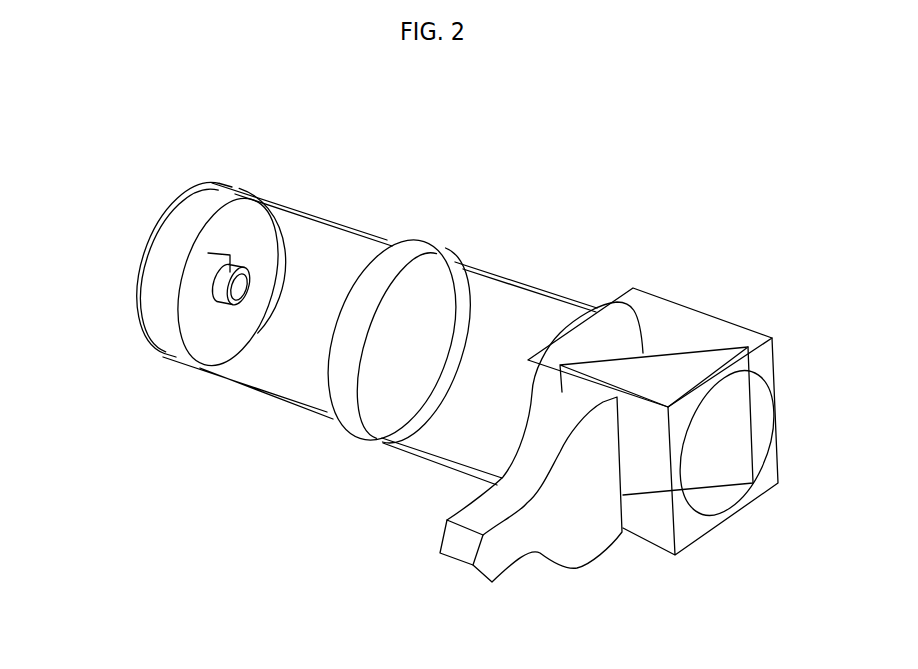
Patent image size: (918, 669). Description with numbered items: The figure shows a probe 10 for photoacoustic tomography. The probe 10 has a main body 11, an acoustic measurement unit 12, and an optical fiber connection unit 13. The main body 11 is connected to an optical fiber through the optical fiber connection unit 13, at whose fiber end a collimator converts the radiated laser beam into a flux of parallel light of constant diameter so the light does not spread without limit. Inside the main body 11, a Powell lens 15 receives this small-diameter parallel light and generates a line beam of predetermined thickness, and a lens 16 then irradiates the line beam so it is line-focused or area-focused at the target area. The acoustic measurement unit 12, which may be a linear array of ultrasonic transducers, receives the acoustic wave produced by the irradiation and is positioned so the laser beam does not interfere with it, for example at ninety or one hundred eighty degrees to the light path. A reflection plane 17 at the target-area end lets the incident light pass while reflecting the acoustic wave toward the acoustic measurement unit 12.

The photoacoustic probe 10 is at (584, 210).
The main body 11 is at (290, 368).
The acoustic measurement unit 12 is at (462, 535).
The optical fiber connection unit 13 is at (212, 290).
The Powell lens 15 is at (230, 258).
The lens 16 is at (407, 330).
The reflection plane 17 is at (673, 370).